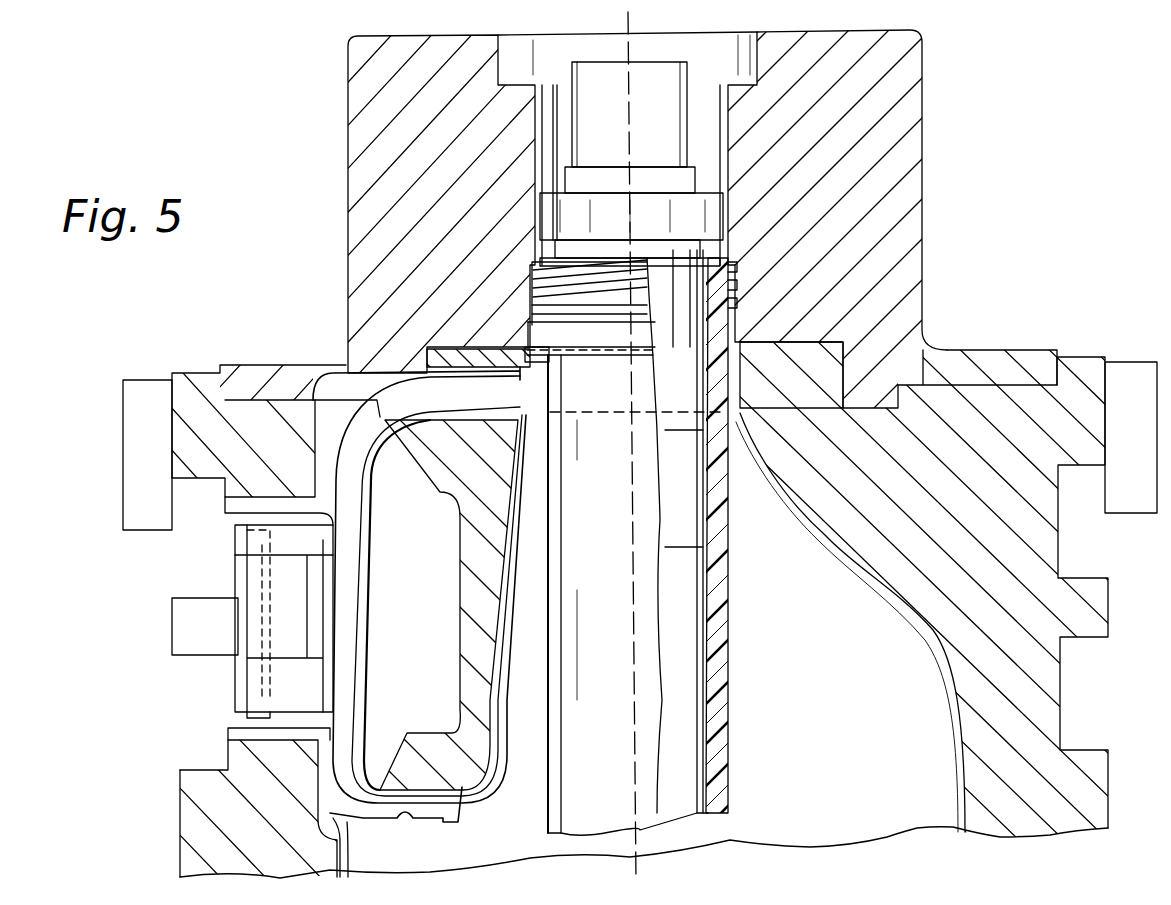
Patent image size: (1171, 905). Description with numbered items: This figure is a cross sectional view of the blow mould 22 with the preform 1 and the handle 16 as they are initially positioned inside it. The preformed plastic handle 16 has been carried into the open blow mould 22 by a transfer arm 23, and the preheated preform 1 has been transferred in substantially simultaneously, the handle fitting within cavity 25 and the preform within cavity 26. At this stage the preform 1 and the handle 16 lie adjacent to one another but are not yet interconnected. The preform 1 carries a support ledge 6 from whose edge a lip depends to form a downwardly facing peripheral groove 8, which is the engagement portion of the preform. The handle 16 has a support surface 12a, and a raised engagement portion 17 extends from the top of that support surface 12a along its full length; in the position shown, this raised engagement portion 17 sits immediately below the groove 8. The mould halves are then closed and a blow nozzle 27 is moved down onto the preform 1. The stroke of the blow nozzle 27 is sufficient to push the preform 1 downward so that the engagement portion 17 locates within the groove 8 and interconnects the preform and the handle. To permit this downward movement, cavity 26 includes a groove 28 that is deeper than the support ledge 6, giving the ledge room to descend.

The preform 1 is at (737, 632).
The support ledge 6 is at (740, 338).
The downwardly facing peripheral groove 8 is at (585, 355).
The support surface 12a is at (552, 372).
The handle 16 is at (382, 540).
The raised engagement portion 17 is at (563, 368).
The blow mould 22 is at (1070, 305).
The transfer arm 23 is at (230, 567).
The cavity 25 is at (343, 415).
The cavity 26 is at (825, 729).
The blow nozzle 27 is at (725, 212).
The groove 28 is at (742, 362).